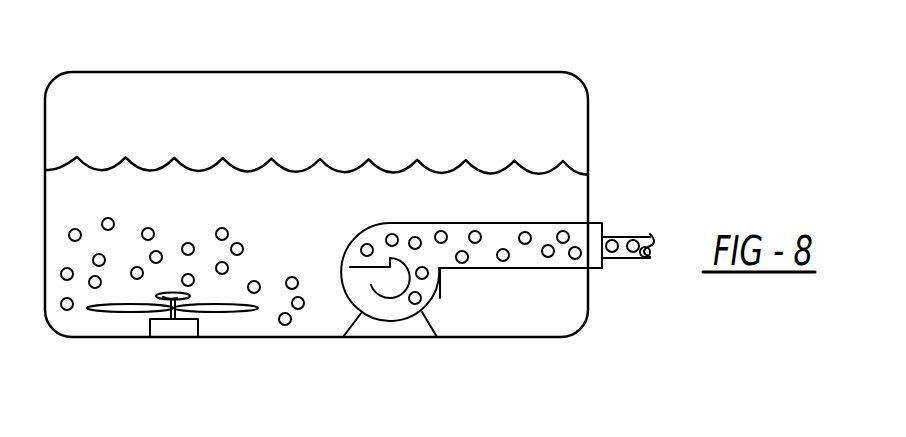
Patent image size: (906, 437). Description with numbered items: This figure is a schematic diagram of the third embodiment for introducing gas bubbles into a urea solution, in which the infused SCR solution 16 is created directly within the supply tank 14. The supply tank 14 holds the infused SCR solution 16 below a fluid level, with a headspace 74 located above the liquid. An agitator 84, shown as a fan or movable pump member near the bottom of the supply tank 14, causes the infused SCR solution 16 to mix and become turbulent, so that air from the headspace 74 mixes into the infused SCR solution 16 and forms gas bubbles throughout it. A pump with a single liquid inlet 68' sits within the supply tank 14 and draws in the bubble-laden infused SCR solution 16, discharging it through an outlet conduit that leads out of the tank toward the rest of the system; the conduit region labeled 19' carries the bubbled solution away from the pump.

The supply tank 14 is at (584, 77).
The headspace 74 is at (475, 128).
The infused SCR solution 16 is at (198, 208).
The agitator 84 is at (165, 332).
The liquid inlet 68' is at (358, 320).
The discharge conduit 19' is at (507, 307).